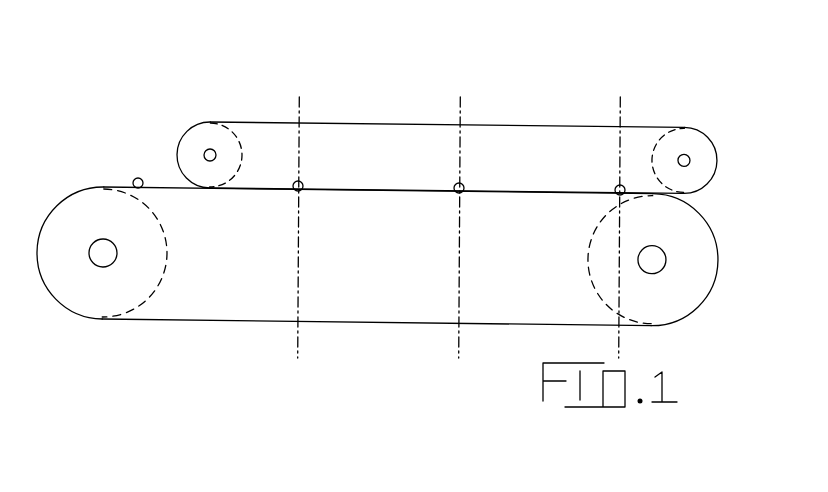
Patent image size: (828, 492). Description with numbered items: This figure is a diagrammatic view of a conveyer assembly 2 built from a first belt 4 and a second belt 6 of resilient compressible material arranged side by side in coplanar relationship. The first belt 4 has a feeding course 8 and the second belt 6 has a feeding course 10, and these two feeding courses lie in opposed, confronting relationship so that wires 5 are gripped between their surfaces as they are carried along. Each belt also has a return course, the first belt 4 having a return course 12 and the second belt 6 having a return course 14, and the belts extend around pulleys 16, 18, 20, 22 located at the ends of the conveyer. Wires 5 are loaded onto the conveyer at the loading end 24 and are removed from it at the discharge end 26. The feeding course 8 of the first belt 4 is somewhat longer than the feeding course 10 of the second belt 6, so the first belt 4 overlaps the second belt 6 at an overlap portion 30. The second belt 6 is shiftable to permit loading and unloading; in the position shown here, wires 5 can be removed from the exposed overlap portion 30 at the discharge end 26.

The conveyer assembly 2 is at (237, 62).
The first belt 4 is at (376, 326).
The wires 5 is at (136, 178).
The second belt 6 is at (325, 122).
The feeding course of the first belt 8 is at (378, 190).
The feeding course of the second belt 10 is at (447, 190).
The return course of the first belt 12 is at (376, 322).
The return course of the second belt 14 is at (447, 124).
The pulley 16 is at (653, 260).
The pulley 18 is at (102, 253).
The pulley 20 is at (685, 160).
The pulley 22 is at (210, 155).
The loading end 24 is at (689, 194).
The discharge end 26 is at (110, 178).
The overlap portion 30 is at (167, 188).